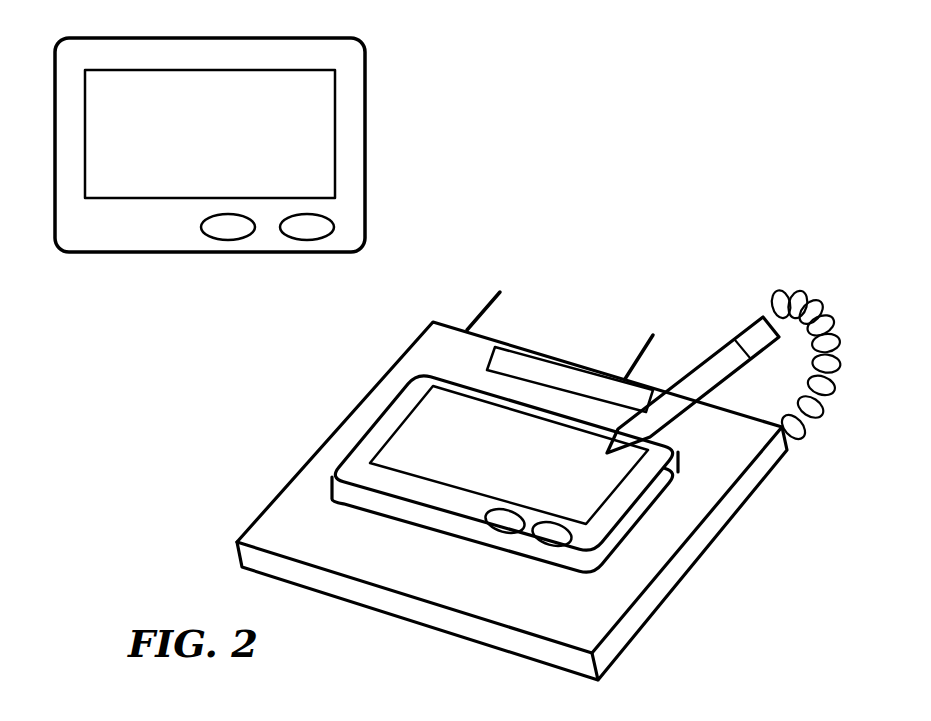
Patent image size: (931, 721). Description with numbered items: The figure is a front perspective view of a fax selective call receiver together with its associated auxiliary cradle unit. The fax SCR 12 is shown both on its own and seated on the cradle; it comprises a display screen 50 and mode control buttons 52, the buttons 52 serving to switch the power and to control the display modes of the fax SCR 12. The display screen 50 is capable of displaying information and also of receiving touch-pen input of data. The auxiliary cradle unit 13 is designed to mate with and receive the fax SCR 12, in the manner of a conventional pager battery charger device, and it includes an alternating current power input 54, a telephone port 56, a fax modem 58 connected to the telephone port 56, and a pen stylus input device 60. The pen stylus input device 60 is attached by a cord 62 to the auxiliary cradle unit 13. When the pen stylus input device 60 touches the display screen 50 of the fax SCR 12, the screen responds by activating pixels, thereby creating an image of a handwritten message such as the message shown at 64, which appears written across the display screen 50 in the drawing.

The fax SCR 12 is at (262, 40).
The auxiliary cradle unit 13 is at (308, 460).
The display screen 50 is at (198, 159).
The mode control buttons 52 is at (303, 240).
The alternating current (AC) power input 54 is at (478, 312).
The telephone port 56 is at (637, 352).
The fax modem 58 is at (527, 349).
The pen stylus input device 60 is at (748, 325).
The cord 62 is at (833, 383).
The handwritten message 64 is at (447, 407).